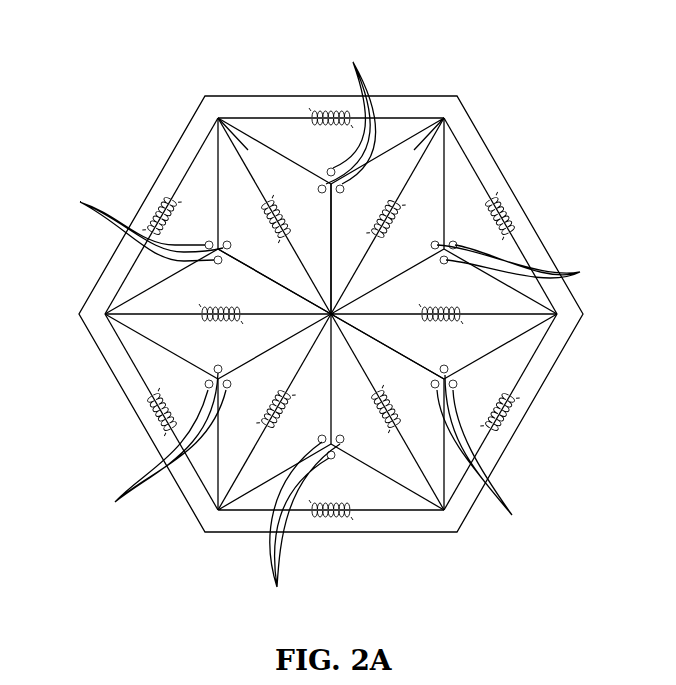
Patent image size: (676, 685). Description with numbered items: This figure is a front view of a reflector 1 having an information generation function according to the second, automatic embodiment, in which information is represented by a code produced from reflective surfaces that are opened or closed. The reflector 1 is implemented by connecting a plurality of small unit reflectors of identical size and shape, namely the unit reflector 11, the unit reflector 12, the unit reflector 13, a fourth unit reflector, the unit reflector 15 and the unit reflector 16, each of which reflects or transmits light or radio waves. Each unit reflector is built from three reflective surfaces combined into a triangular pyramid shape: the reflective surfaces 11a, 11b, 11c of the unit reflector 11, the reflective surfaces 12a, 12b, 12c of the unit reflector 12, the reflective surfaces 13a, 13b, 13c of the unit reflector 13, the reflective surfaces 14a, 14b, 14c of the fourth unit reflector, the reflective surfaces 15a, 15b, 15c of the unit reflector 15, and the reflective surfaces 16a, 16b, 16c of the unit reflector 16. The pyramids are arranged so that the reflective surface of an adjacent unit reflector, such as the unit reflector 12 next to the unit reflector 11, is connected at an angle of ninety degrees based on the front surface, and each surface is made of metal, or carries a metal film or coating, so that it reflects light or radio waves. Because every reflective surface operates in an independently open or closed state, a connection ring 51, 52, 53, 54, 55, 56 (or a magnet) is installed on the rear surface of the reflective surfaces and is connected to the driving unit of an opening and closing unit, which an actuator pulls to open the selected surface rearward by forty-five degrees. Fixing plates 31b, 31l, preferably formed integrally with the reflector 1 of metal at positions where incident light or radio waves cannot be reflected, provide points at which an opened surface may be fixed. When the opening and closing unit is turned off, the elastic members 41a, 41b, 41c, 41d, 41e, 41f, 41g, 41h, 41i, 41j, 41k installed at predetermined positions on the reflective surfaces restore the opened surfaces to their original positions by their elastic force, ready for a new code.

The reflector 1 is at (508, 58).
The unit reflector 11 is at (385, 115).
The reflective surface 11a is at (248, 127).
The reflective surface 11b is at (260, 122).
The reflective surface 11c is at (446, 121).
The unit reflector 12 is at (518, 245).
The reflective surface 12a is at (435, 167).
The reflective surface 12b is at (462, 197).
The reflective surface 12c is at (512, 306).
The unit reflector 13 is at (477, 457).
The reflective surface 13a is at (488, 373).
The reflective surface 13b is at (508, 392).
The reflective surface 13c is at (432, 470).
The reflective surface 14a is at (413, 480).
The reflective surface 14b is at (360, 498).
The reflective surface 14c is at (244, 486).
The unit reflector 15 is at (183, 430).
The reflective surface 15a is at (200, 492).
The reflective surface 15b is at (201, 452).
The reflective surface 15c is at (185, 343).
The unit reflector 16 is at (118, 292).
The reflective surface 16a is at (173, 285).
The reflective surface 16b is at (157, 267).
The reflective surface 16c is at (233, 210).
The fixing plate 31b is at (433, 96).
The fixing plate 31l is at (218, 118).
The elastic member 41a is at (312, 108).
The elastic member 41b is at (405, 170).
The elastic member 41c is at (510, 206).
The elastic member 41d is at (480, 347).
The elastic member 41e is at (508, 415).
The elastic member 41f is at (327, 522).
The elastic member 41g is at (262, 412).
The elastic member 41h is at (158, 416).
The elastic member 41i is at (150, 322).
The elastic member 41j is at (165, 208).
The elastic member 41k is at (246, 179).
The connection ring 51 is at (347, 114).
The connection ring 52 is at (518, 263).
The connection ring 53 is at (483, 453).
The connection ring 54 is at (300, 528).
The connection ring 55 is at (161, 446).
The connection ring 56 is at (140, 228).